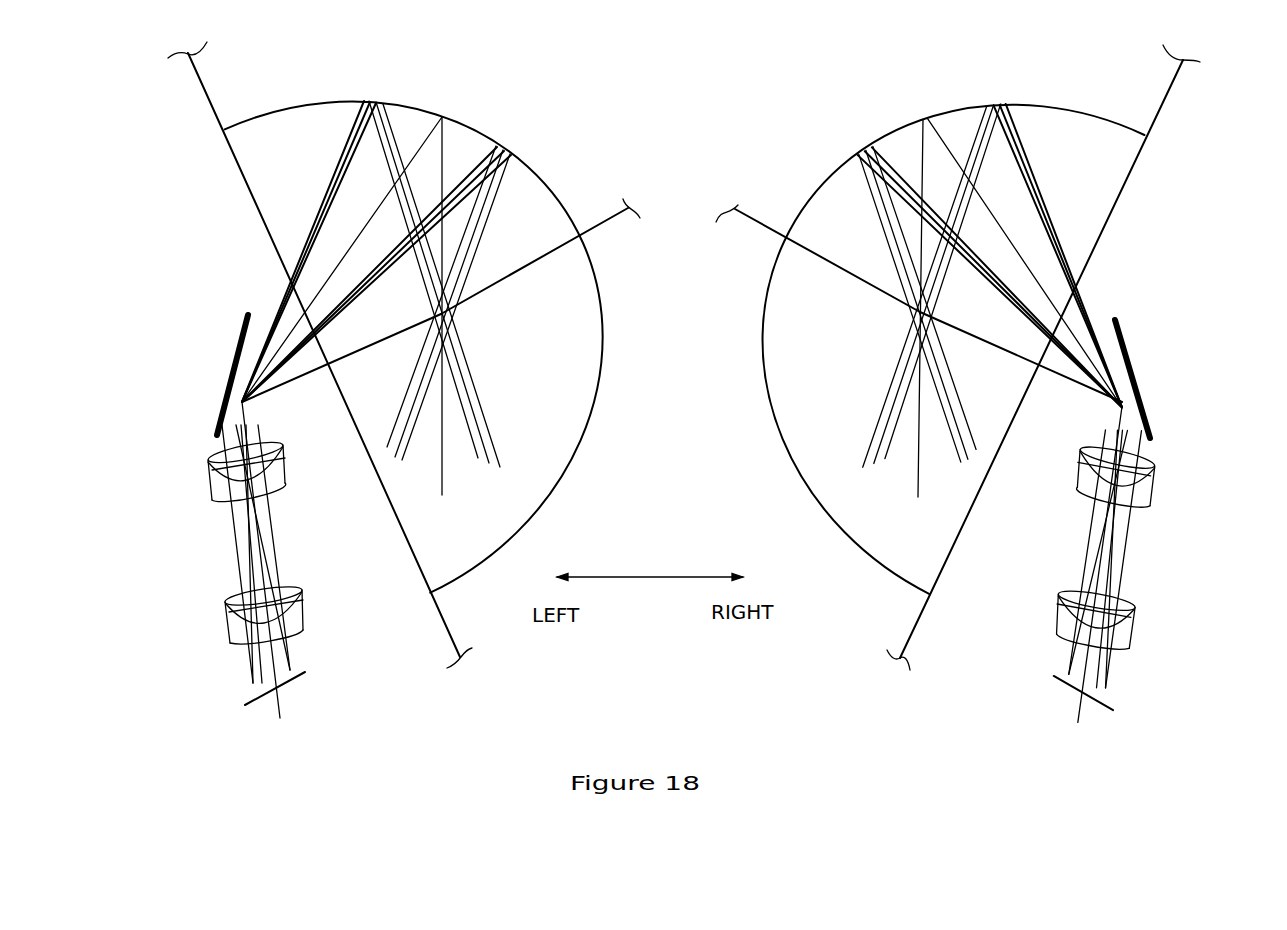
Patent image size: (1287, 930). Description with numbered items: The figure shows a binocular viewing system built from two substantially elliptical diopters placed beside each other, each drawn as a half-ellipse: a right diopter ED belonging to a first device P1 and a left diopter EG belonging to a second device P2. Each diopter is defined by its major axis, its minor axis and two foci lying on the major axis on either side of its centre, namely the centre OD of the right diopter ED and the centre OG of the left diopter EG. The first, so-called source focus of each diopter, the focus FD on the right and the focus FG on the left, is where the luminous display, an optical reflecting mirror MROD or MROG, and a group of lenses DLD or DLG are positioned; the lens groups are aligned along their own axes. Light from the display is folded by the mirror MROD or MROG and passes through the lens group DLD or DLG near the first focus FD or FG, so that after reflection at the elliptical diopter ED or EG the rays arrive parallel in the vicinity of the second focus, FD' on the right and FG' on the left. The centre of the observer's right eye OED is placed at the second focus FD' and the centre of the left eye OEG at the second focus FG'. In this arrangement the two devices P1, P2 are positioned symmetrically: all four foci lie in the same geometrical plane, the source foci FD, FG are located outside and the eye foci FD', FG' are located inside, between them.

The substantially elliptical diopter EG is at (310, 103).
The device P2 is at (489, 121).
The device P1 is at (785, 130).
The substantially elliptical diopter ED is at (1054, 103).
The centre of left eye OEG is at (452, 290).
The second focus FG' is at (447, 284).
The mirror MROG is at (235, 350).
The centre OG is at (328, 363).
The first focus FG is at (376, 260).
The group of lenses DLG is at (288, 480).
The centre of right eye OED is at (910, 297).
The second focus FD' is at (919, 285).
The centre OD is at (1036, 362).
The first focus FD is at (990, 262).
The mirror MROD is at (1130, 350).
The group of lenses DLD is at (1155, 483).